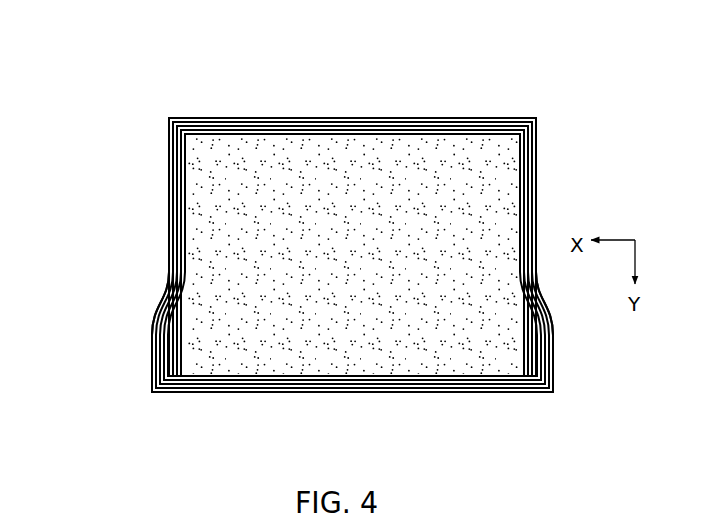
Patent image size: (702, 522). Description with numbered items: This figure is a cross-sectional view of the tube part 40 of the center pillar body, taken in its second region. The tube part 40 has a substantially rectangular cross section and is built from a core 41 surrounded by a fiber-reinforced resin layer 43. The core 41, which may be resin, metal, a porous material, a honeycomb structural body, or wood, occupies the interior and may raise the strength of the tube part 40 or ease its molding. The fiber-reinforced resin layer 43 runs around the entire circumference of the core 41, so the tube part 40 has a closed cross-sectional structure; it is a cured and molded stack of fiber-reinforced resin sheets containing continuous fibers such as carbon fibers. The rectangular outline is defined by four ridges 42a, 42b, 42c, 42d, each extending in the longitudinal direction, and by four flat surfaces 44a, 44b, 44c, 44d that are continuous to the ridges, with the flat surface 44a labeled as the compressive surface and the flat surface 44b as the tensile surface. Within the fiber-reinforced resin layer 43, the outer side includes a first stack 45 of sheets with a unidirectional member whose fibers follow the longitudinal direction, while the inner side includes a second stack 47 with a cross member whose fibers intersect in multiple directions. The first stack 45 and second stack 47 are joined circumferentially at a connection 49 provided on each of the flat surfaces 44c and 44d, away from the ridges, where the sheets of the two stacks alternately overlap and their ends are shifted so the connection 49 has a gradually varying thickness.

The tube part 40 is at (450, 103).
The core 41 is at (213, 233).
The ridge 42a is at (166, 114).
The ridge 42b is at (538, 115).
The ridge 42c is at (166, 404).
The ridge 42d is at (537, 402).
The fiber-reinforced resin layer 43 is at (542, 180).
The flat surface 44a is at (299, 113).
The flat surface 44b is at (420, 404).
The flat surface 44c is at (160, 197).
The flat surface 44d is at (547, 212).
The first stack 45 is at (383, 116).
The second stack 47 is at (352, 394).
The connection 49 is at (140, 350).